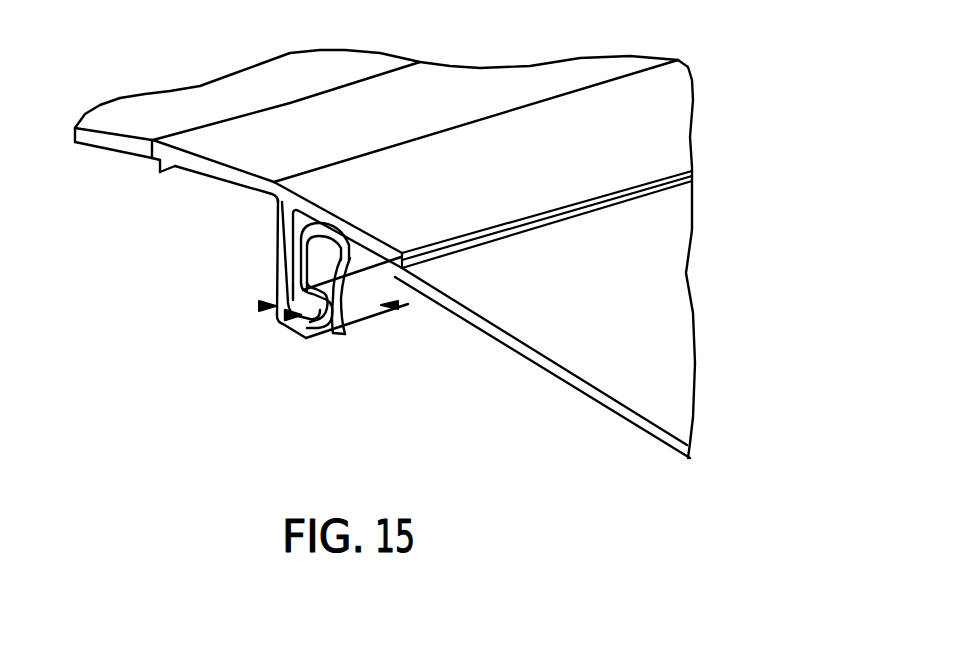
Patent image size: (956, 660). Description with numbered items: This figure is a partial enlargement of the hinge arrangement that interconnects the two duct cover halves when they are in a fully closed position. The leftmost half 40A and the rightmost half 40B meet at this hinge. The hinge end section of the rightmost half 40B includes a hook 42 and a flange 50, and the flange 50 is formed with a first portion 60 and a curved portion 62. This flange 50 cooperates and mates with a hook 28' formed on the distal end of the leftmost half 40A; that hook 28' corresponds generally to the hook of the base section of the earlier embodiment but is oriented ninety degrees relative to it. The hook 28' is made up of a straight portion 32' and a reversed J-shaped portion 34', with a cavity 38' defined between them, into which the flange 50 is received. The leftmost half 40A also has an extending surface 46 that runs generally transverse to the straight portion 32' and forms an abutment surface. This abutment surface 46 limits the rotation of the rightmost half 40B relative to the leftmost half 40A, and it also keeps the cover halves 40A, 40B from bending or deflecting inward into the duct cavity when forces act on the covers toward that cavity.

The leftmost half 40A is at (355, 110).
The extending surface 46 is at (540, 168).
The rightmost half 40B is at (613, 297).
The hook 42 is at (300, 243).
The straight portion 32' is at (235, 275).
The hook 28' is at (203, 334).
The cavity 38' is at (251, 368).
The reversed "J" shaped portion 34' is at (274, 390).
The curved portion 62 is at (353, 320).
The first portion 60 is at (360, 290).
The flange 50 is at (398, 305).